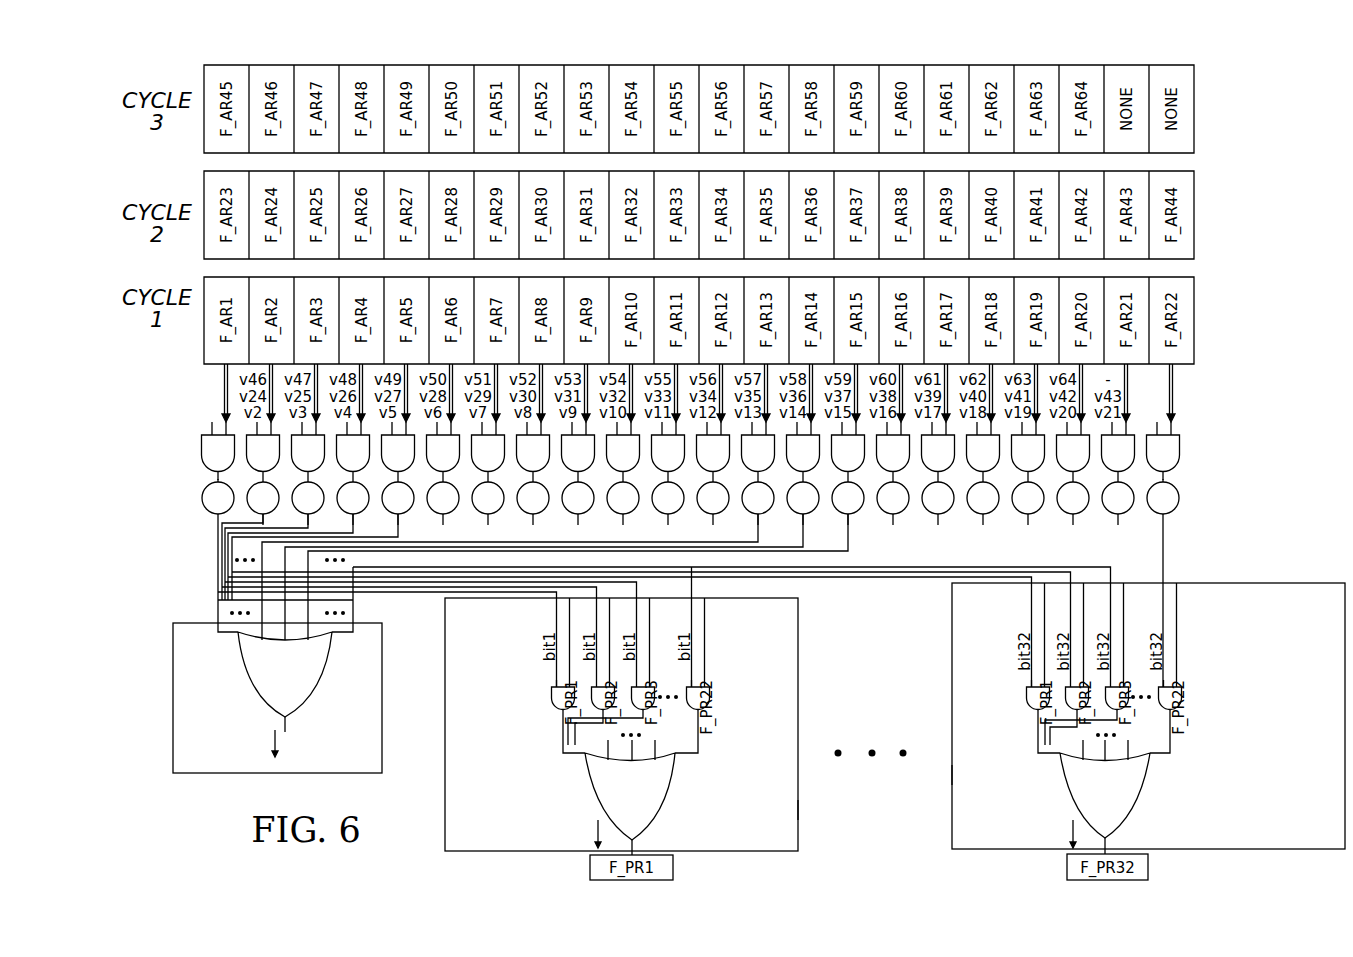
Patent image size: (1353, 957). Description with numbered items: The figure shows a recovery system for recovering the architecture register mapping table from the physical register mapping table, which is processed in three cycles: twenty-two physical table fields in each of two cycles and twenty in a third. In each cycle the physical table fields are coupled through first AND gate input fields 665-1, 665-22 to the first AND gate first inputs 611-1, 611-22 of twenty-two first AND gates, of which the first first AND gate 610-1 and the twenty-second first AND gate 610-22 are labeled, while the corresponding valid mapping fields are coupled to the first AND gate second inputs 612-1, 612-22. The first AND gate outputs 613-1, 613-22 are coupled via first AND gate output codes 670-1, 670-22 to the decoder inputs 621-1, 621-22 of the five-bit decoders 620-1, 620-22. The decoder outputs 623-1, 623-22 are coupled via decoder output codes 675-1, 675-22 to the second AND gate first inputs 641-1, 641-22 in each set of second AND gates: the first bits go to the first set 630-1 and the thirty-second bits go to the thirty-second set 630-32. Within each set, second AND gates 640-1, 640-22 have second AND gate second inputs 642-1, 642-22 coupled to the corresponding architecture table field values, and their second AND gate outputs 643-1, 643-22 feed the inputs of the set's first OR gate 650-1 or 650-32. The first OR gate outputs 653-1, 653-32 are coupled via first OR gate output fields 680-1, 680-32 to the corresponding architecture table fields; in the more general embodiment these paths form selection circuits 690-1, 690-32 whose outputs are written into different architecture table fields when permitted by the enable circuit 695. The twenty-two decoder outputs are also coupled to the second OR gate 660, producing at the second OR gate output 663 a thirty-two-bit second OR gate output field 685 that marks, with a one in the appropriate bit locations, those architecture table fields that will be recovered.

The first first AND gate 610-1 is at (204, 445).
The first first AND gate first input 611-1 is at (212, 424).
The first first AND gate second input 612-1 is at (223, 430).
The first first AND gate output 613-1 is at (206, 462).
The first decoder 620-1 is at (203, 497).
The first decoder input 621-1 is at (216, 479).
The first decoder output 623-1 is at (216, 518).
The first first AND gate input field 665-1 is at (183, 380).
The first first AND gate output code 670-1 is at (190, 452).
The first decoder output code 675-1 is at (195, 535).
The twenty-second first AND gate 610-22 is at (1182, 445).
The twenty-second first AND gate first input 611-22 is at (1158, 427).
The twenty-second first AND gate second input 612-22 is at (1172, 428).
The twenty-second first AND gate output 613-22 is at (1181, 463).
The twenty-second decoder 620-22 is at (1183, 497).
The twenty-second decoder input 621-22 is at (1168, 479).
The twenty-second decoder output 623-22 is at (1170, 518).
The twenty-second first AND gate input field 665-22 is at (1185, 395).
The twenty-second first AND gate output code 670-22 is at (1192, 450).
The twenty-second decoder output code 675-22 is at (1185, 554).
The first set of second AND gates 630-1 is at (482, 668).
The thirty-second set of second AND gates 630-32 is at (1290, 682).
The first second AND gate 640-1 is at (552, 700).
The first second AND gate first input 641-1 is at (556, 683).
The first second AND gate second input 642-1 is at (569, 683).
The first second AND gate output 643-1 is at (563, 715).
The twenty-second second AND gate 640-22 is at (709, 702).
The twenty-second second AND gate first input 641-22 is at (705, 683).
The twenty-second second AND gate second input 642-22 is at (709, 690).
The twenty-second second AND gate output 643-22 is at (699, 715).
The first first OR gate 650-1 is at (668, 790).
The first first OR gate output 653-1 is at (636, 839).
The first first OR gate output field 680-1 is at (598, 825).
The first selection circuit 690-1 is at (798, 812).
The thirty-second first OR gate 650-32 is at (1143, 790).
The thirty-second first OR gate output 653-32 is at (1109, 838).
The thirty-second first OR gate output field 680-32 is at (1073, 827).
The thirty-second selection circuit 690-32 is at (952, 775).
The second OR gate 660 is at (249, 680).
The second OR gate output 663 is at (287, 716).
The second OR gate output field 685 is at (275, 738).
The enable circuit 695 is at (222, 773).